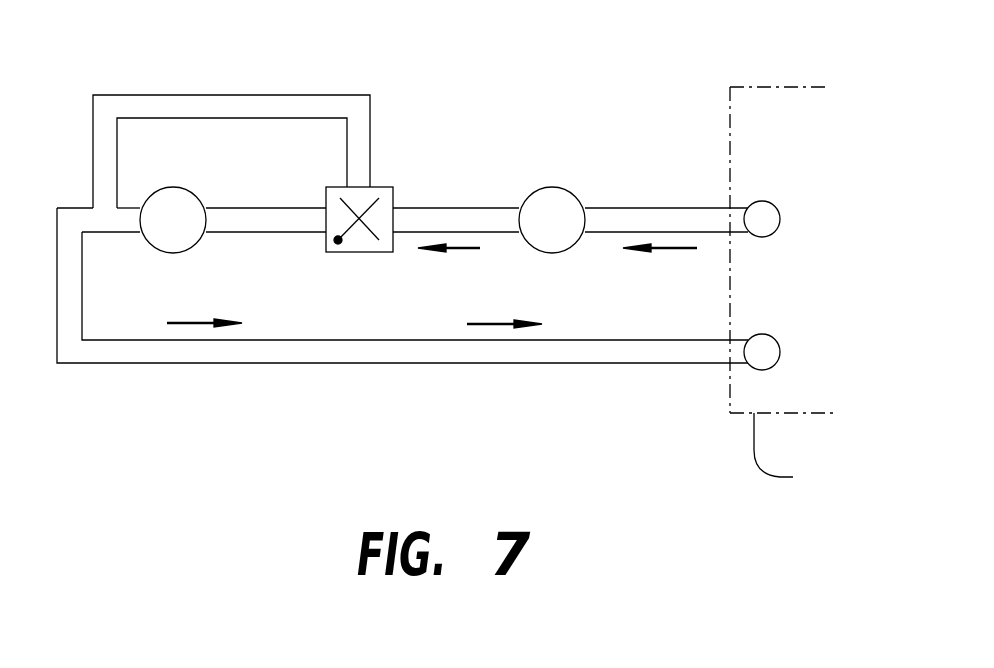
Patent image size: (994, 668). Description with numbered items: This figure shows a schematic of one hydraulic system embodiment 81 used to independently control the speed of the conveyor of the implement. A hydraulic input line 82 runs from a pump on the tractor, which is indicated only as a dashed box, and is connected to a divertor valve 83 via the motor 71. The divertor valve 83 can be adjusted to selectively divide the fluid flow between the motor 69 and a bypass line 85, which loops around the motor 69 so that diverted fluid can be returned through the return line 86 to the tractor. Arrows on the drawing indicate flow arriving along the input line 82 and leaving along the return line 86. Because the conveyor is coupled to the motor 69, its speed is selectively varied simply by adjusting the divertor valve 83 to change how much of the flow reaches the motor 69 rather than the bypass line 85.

The hydraulic system 81 is at (471, 248).
The hydraulic input line 82 is at (610, 207).
The divertor valve 83 is at (359, 252).
The bypass line 85 is at (232, 95).
The return line 86 is at (403, 363).
The motor 69 is at (173, 187).
The motor 71 is at (552, 187).